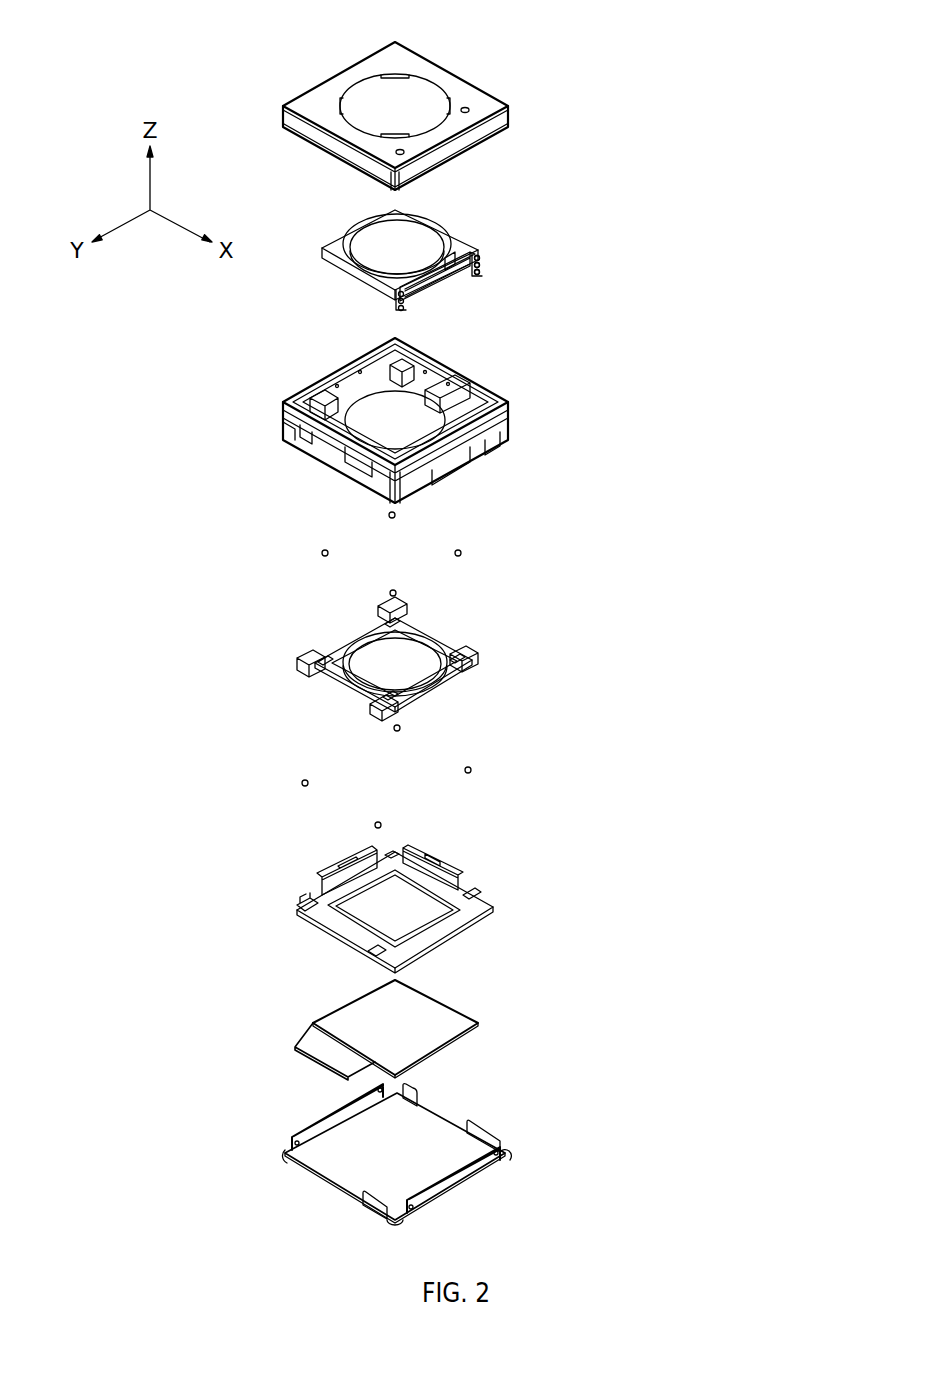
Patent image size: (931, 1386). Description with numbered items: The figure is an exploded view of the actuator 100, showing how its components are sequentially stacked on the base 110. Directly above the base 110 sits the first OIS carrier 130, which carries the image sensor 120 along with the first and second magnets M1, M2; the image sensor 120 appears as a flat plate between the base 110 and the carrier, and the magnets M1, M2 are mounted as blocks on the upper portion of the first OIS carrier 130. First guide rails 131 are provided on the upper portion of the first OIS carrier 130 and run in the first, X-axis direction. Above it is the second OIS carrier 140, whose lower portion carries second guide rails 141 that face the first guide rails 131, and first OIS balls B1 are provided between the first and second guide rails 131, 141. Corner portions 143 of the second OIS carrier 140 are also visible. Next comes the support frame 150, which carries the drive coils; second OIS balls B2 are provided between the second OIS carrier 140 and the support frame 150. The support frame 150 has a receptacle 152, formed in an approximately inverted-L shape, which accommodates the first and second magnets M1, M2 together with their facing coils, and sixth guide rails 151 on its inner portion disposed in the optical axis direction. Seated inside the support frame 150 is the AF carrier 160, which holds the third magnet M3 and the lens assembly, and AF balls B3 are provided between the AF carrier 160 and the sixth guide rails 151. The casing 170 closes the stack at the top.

The actuator 100 is at (300, 26).
The base 110 is at (518, 1155).
The image sensor 120 is at (490, 1022).
The first OIS carrier 130 is at (408, 893).
The first guide rails 131 is at (300, 912).
The second OIS carrier 140 is at (442, 654).
The second guide rails 141 is at (475, 665).
The corner block of movable frame 143 is at (460, 657).
The support frame 150 is at (451, 420).
The sixth guide rails 151 is at (483, 393).
The receptacle 152 is at (446, 370).
The AF carrier 160 is at (454, 273).
The casing 170 is at (522, 112).
The first OIS balls B1 is at (400, 728).
The second OIS balls B2 is at (460, 550).
The AF balls B3 is at (481, 274).
The first magnet M1 is at (442, 863).
The second magnet M2 is at (340, 856).
The third magnet M3 is at (448, 295).